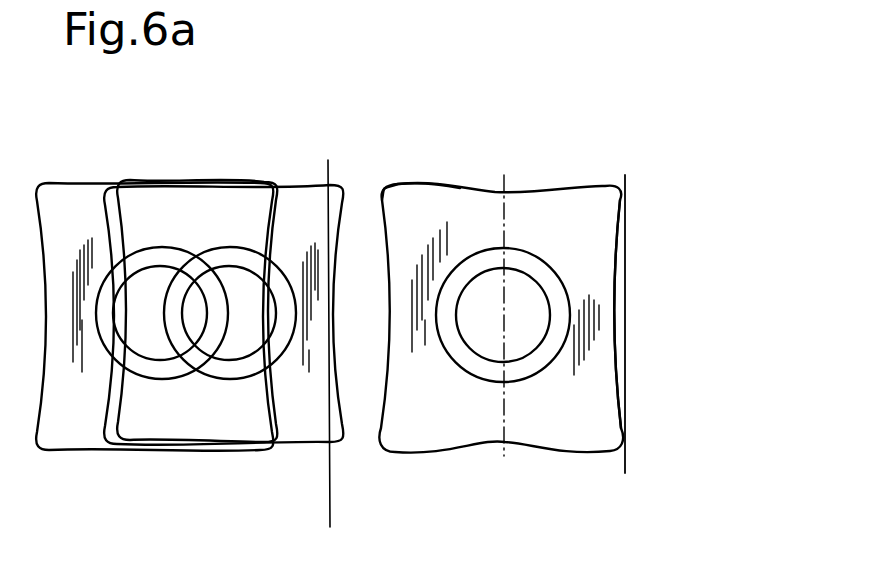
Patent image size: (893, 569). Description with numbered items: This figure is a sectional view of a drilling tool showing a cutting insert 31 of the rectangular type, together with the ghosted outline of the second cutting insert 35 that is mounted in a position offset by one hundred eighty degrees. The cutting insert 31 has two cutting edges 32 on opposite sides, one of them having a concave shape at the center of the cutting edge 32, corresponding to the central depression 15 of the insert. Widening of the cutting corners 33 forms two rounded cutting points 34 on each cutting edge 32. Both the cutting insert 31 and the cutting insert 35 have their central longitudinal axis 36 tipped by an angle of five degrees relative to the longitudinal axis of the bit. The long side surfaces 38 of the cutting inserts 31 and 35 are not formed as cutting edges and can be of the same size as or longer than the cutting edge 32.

The central depression 15 is at (500, 438).
The cutting insert 31 is at (583, 278).
The cutting edge 32 is at (478, 178).
The cutting corner 33 is at (628, 188).
The cutting point 34 is at (413, 180).
The cutting insert 35 is at (308, 413).
The central longitudinal axis 36 is at (505, 237).
The long side surface 38 is at (613, 365).